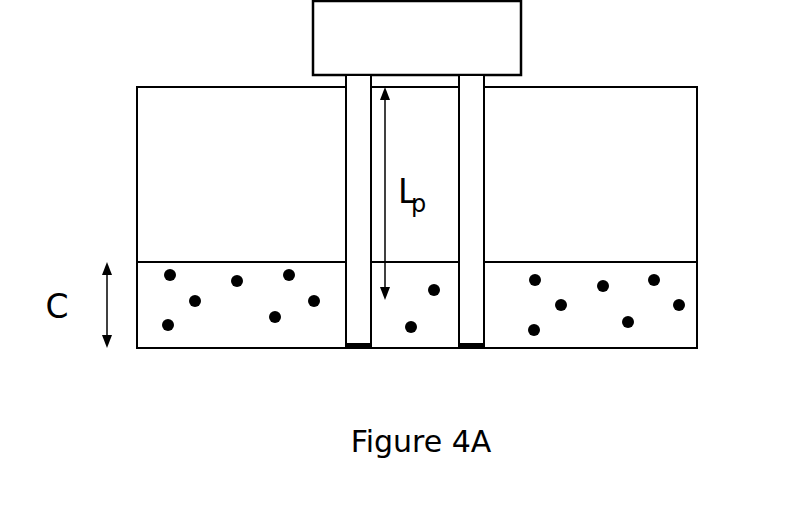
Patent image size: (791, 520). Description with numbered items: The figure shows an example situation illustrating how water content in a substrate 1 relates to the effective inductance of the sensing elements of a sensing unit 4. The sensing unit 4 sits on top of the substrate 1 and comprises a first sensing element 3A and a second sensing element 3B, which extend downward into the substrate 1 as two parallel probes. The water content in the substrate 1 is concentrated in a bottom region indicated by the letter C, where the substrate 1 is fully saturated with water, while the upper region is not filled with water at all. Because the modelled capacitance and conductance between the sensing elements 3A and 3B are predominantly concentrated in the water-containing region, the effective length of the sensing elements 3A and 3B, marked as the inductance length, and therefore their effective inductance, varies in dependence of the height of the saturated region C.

The substrate 1 is at (630, 87).
The sensing unit 4 is at (410, 51).
The first sensing element 3A is at (344, 185).
The second sensing element 3B is at (485, 203).